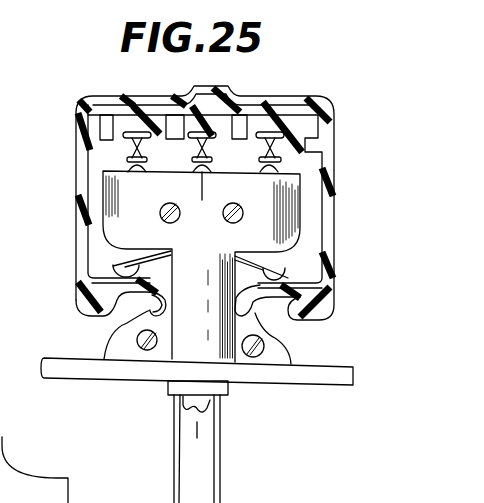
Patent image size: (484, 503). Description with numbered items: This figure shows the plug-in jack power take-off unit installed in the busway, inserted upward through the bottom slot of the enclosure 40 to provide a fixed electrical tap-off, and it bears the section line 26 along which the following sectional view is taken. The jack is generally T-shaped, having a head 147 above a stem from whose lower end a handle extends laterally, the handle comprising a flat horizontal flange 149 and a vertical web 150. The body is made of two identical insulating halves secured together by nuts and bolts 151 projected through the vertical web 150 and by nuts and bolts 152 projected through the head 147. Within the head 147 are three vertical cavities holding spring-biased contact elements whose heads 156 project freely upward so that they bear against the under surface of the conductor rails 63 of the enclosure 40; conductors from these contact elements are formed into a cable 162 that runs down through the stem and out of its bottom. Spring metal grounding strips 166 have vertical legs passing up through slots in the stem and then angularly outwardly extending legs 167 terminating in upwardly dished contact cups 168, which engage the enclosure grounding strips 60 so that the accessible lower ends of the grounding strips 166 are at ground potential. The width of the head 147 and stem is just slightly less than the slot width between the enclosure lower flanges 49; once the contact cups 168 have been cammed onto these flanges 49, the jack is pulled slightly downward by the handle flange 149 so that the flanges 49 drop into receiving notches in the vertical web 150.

The enclosure 40 is at (92, 104).
The conductor rails 63 is at (130, 155).
The heads of contact elements 156 is at (135, 171).
The section line 26— 26 is at (208, 171).
The head 147 is at (302, 212).
The nuts and bolts 152 is at (176, 215).
The contact cups 168 is at (124, 272).
The angularly laterally outwardly extending legs 167 is at (144, 271).
The enclosure grounding strips 60 is at (288, 282).
The enclosure lower flanges 49 is at (157, 297).
The nuts and bolts 151 is at (137, 340).
The vertical web 150 is at (270, 354).
The horizontal flange 149 is at (353, 377).
The cable 162 is at (186, 403).
The grounding strips 166 is at (267, 485).